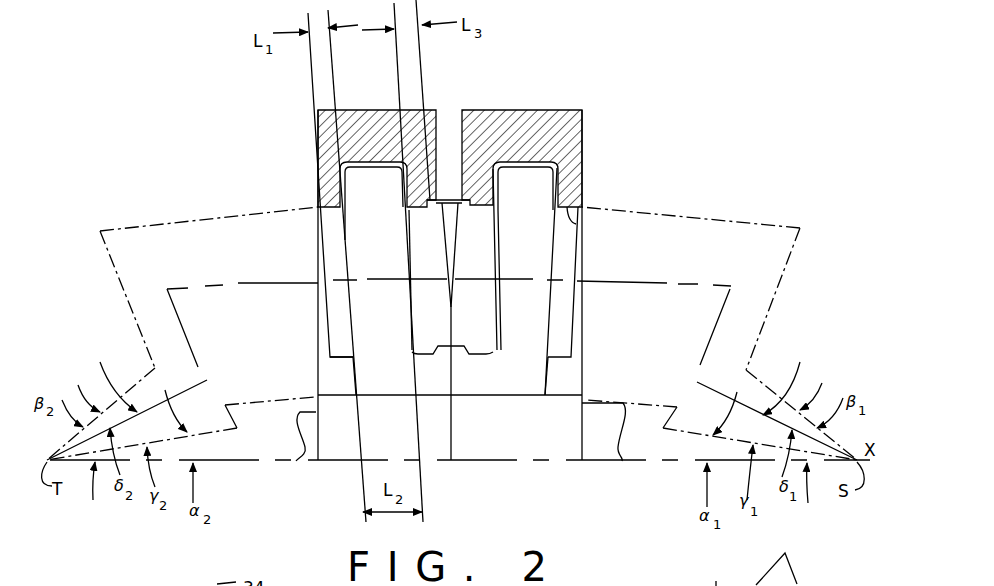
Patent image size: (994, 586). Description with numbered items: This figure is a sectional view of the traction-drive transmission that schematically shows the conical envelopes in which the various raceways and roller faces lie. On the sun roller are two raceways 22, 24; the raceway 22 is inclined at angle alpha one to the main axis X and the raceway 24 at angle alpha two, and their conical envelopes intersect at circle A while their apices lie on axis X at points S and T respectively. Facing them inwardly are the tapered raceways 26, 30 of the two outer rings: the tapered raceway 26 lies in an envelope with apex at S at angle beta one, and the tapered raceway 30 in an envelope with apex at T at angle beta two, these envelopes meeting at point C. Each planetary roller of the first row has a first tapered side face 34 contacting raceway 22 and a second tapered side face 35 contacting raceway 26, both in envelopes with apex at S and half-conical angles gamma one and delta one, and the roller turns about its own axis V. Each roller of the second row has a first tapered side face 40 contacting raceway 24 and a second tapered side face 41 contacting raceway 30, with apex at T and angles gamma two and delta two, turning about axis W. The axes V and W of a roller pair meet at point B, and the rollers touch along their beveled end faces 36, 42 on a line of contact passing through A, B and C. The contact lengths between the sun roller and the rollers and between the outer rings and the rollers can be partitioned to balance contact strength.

The raceway 22 is at (568, 397).
The raceway 24 is at (338, 388).
The tapered raceway 26 is at (576, 215).
The tapered raceway 30 is at (321, 208).
The first tapered side face 34 is at (521, 395).
The second tapered side face 35 is at (568, 352).
The beveled end face 36 is at (455, 228).
The first tapered side face 40 is at (383, 395).
The second tapered side face 41 is at (337, 353).
The beveled end face 42 is at (447, 218).